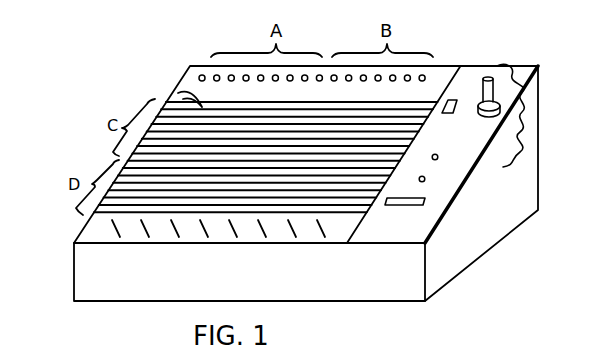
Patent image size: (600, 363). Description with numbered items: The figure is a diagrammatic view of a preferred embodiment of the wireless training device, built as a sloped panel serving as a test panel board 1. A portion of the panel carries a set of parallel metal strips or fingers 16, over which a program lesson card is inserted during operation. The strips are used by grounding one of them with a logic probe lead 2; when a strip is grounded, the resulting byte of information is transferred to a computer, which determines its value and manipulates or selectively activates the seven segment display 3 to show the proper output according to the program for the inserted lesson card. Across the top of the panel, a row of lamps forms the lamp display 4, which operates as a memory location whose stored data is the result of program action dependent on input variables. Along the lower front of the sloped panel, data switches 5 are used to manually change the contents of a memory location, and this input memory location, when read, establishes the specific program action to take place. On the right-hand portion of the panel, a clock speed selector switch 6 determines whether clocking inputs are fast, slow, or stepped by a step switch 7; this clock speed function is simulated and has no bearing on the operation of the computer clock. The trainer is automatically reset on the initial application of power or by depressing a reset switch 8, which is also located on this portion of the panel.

The test panel board 1 is at (132, 308).
The logic probe lead 2 is at (486, 77).
The seven segment display 3 is at (458, 105).
The lamp display 4 is at (197, 77).
The data switches 5 is at (272, 226).
The clock speed selector switch 6 is at (418, 207).
The step switch 7 is at (425, 181).
The reset switch 8 is at (438, 159).
The metal strips 16 is at (182, 93).